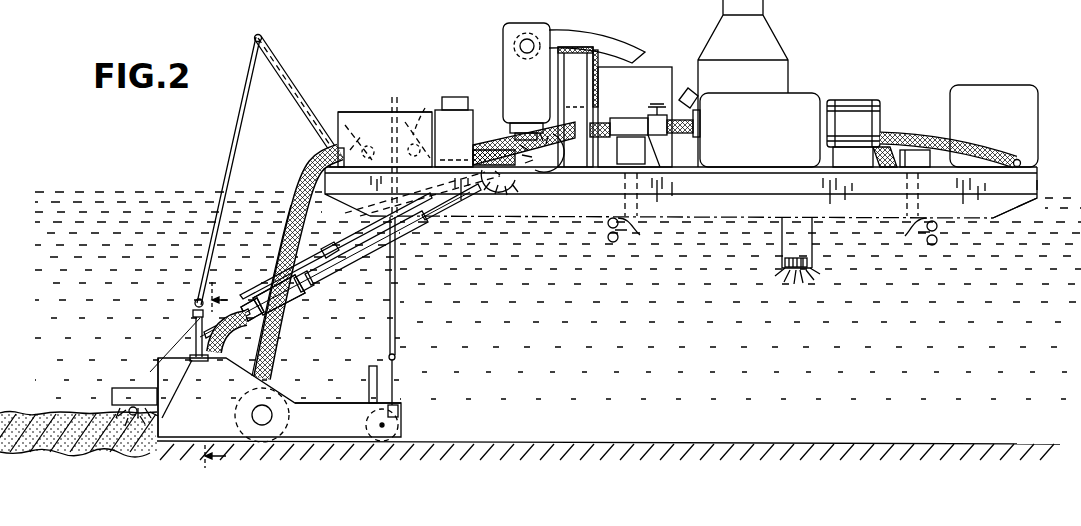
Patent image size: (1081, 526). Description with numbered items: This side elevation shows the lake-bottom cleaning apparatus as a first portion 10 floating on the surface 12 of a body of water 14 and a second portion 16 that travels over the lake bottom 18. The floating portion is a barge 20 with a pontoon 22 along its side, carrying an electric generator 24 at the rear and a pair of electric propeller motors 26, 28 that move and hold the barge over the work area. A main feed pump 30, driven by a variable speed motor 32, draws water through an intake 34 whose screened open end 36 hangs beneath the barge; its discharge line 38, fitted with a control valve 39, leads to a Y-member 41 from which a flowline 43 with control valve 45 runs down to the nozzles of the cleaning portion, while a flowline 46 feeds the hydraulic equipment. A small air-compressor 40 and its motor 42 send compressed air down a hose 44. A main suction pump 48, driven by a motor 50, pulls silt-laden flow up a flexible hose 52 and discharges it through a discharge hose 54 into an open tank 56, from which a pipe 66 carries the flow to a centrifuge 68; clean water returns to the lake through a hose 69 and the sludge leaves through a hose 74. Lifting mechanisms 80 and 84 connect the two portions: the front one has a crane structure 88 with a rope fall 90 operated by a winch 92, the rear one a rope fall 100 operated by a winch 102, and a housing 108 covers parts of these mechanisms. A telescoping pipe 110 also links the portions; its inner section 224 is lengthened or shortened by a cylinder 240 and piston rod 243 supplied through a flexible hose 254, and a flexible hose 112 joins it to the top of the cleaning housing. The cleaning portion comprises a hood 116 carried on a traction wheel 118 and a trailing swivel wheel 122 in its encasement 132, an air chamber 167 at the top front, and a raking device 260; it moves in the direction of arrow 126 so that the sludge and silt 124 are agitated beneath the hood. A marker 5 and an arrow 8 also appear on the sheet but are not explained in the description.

The dimension 5 is at (223, 377).
The direction of travel arrow 8 is at (1050, 153).
The first portion 10 is at (915, 86).
The surface of the body of water 12 is at (701, 188).
The body of water 14 is at (617, 331).
The second portion 16 is at (155, 360).
The lake bottom 18 is at (590, 442).
The barge 20 is at (1070, 196).
The pontoon 22 is at (1002, 211).
The electric generator 24 is at (1005, 88).
The electric propeller motor 26 is at (912, 236).
The electric propeller motor 28 is at (620, 153).
The main feed pump 30 is at (810, 93).
The variable speed engine or motor 32 is at (853, 133).
The water intake 34 is at (812, 237).
The open end 36 is at (785, 270).
The discharge line 38 is at (655, 142).
The control valve 39 is at (655, 105).
The air-compressor 40 is at (463, 153).
The Y-member 41 is at (627, 125).
The motor 42 is at (457, 97).
The flowline 43 is at (308, 168).
The hose 44 is at (282, 348).
The control valve 45 is at (576, 102).
The flowline 46 is at (586, 142).
The main suction pump 48 is at (503, 30).
The variable speed engine motor 50 is at (584, 93).
The flexible hose 52 is at (540, 170).
The discharge hose 54 is at (577, 34).
The open tank 56 is at (676, 67).
The pipe 66 is at (695, 95).
The centrifuge 68 is at (723, 28).
The hose 69 is at (885, 167).
The hose 74 is at (966, 147).
The lifting mechanism 80 is at (194, 303).
The lifting mechanism 84 is at (417, 370).
The crane structure 88 is at (262, 37).
The rope fall or lift 90 is at (244, 90).
The winch 92 is at (385, 139).
The rope fall or lift 100 is at (396, 297).
The winch 102 is at (454, 138).
The housing 108 is at (376, 112).
The telescoping pipe 110 is at (442, 226).
The flexible hose 112 is at (237, 336).
The hood or housing structure 116 is at (345, 403).
The traction wheel 118 is at (274, 440).
The trailing swivel-type wheel 122 is at (392, 440).
The sludge and silt 124 is at (65, 411).
The arrow 126 is at (92, 375).
The encasement 132 is at (369, 378).
The air chamber or tank 167 is at (166, 376).
The inner section 224 is at (300, 292).
The cylinder 240 is at (328, 245).
The piston rod 243 is at (265, 280).
The flexible hose 254 is at (493, 192).
The mechanical raking or scraping device 260 is at (106, 393).